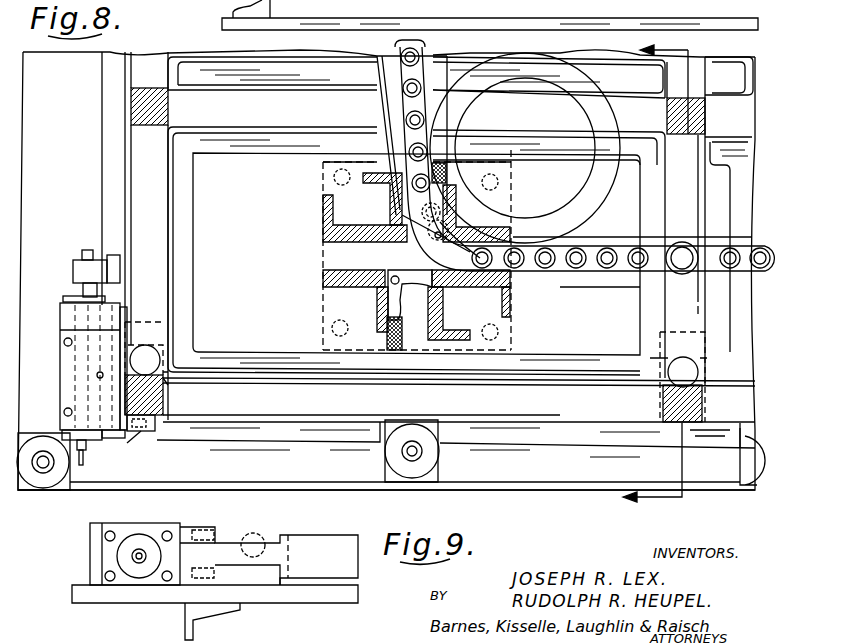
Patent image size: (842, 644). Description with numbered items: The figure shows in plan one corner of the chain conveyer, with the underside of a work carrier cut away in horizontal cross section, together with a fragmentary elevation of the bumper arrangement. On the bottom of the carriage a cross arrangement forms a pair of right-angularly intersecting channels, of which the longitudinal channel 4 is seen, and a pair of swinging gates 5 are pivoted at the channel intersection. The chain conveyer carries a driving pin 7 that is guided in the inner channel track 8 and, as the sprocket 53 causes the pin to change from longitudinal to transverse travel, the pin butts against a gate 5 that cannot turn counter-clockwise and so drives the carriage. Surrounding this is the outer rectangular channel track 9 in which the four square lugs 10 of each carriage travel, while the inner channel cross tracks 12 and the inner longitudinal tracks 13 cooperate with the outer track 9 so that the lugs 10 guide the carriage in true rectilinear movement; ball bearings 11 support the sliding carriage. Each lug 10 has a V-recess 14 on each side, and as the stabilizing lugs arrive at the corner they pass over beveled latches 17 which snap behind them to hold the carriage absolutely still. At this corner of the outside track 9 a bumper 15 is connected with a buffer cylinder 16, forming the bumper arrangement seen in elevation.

In FIG. 8, the longitudinal channel 4 is at (330, 181).
In FIG. 8, the swinging gates 5 is at (400, 212).
In FIG. 8, the driving pin 7 is at (647, 273).
In FIG. 8, the channel track 8 is at (568, 286).
In FIG. 8, the rectangular channel track 9 is at (52, 545).
In FIG. 8, the lugs 10 is at (132, 99).
In FIG. 8, the ball bearings 11 is at (422, 444).
In FIG. 8, the inner channel cross tracks 12 is at (668, 190).
In FIG. 8, the inner longitudinal tracks 13 is at (547, 128).
In FIG. 8, the V-recess 14 is at (166, 397).
In FIG. 8, the bumper 15 is at (148, 432).
In FIG. 9, the bumper 15 is at (236, 536).
In FIG. 8, the buffer cylinder 16 is at (66, 358).
In FIG. 9, the buffer cylinder 16 is at (102, 556).
In FIG. 8, the beveled latches 17 is at (147, 358).
In FIG. 8, the sprocket 53 is at (500, 43).